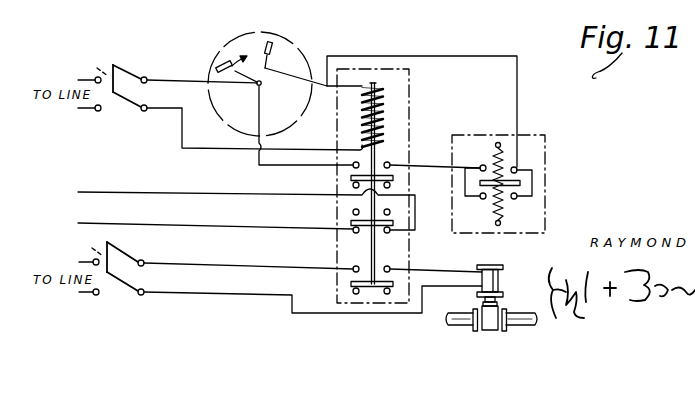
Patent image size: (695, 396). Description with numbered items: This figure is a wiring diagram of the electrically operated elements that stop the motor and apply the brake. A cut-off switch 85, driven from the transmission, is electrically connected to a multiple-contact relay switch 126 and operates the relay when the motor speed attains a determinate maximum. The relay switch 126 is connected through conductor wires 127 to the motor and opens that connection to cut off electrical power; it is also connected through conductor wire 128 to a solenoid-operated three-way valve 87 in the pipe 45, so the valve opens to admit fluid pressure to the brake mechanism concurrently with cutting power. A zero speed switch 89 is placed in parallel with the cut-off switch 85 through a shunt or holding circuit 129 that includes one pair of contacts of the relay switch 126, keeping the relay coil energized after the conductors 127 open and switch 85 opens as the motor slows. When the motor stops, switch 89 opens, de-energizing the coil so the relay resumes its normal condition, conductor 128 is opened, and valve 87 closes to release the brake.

The cut-off switch 85 is at (284, 38).
The multiple-contact relay switch 126 is at (410, 114).
The shunt or holding circuit 129 is at (515, 116).
The zero speed switch 89 is at (545, 220).
The conductor wires 127 is at (276, 198).
The conductor wire 128 is at (433, 271).
The solenoid-operated three-way valve 87 is at (498, 284).
The pipe 45 is at (534, 327).